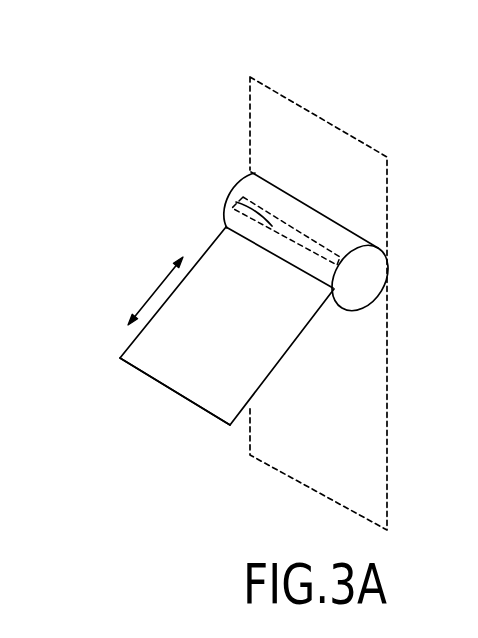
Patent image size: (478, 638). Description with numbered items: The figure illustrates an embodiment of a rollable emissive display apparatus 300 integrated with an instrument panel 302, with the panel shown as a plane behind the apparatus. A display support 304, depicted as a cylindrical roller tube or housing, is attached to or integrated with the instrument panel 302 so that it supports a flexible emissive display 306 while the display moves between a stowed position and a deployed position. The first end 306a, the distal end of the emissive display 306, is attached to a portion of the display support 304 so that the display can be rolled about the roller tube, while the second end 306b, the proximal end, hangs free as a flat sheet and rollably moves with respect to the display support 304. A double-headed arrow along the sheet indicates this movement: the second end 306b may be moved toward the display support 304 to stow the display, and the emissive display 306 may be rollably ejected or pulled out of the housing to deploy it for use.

The rollable emissive display apparatus 300 is at (166, 77).
The instrument panel 302 is at (309, 111).
The display support 304 is at (364, 278).
The flexible emissive display 306 is at (213, 262).
The first end 306a is at (236, 202).
The second end 306b is at (167, 390).